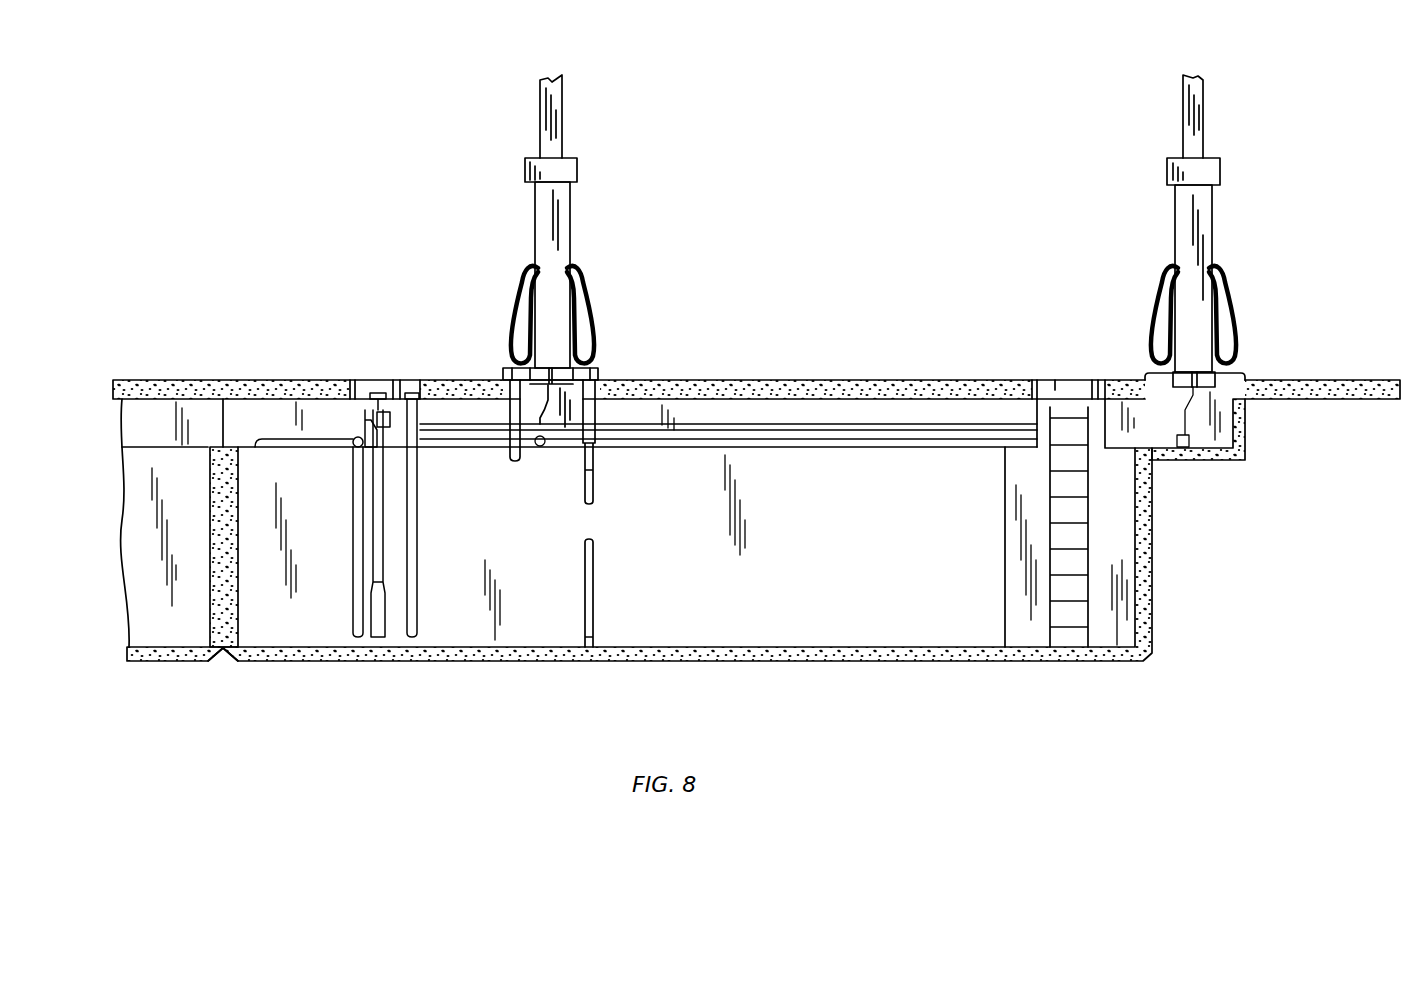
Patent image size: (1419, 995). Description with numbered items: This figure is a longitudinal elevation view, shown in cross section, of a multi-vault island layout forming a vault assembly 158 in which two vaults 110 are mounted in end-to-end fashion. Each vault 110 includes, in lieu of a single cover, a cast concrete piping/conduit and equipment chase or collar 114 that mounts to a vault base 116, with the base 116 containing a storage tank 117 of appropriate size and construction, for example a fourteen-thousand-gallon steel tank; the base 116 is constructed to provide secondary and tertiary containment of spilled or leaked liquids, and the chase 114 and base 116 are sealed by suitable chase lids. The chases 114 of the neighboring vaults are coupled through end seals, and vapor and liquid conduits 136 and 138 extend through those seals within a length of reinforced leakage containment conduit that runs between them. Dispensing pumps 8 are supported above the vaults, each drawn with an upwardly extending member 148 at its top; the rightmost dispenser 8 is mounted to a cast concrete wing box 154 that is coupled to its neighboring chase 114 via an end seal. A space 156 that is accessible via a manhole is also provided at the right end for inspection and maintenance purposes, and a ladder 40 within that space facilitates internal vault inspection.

The dispensing pump 8 is at (565, 232).
The cable 148 is at (560, 105).
The vault assembly 158 is at (932, 130).
The chase 114 is at (190, 396).
The vapor conduit 136 is at (730, 428).
The liquid conduit 138 is at (828, 440).
The wing box 154 is at (1247, 440).
The space 156 is at (1121, 535).
The ladder 40 is at (1068, 627).
The storage tank 117 is at (153, 632).
The vault base 116 is at (173, 657).
The vault assembly 110 is at (197, 661).